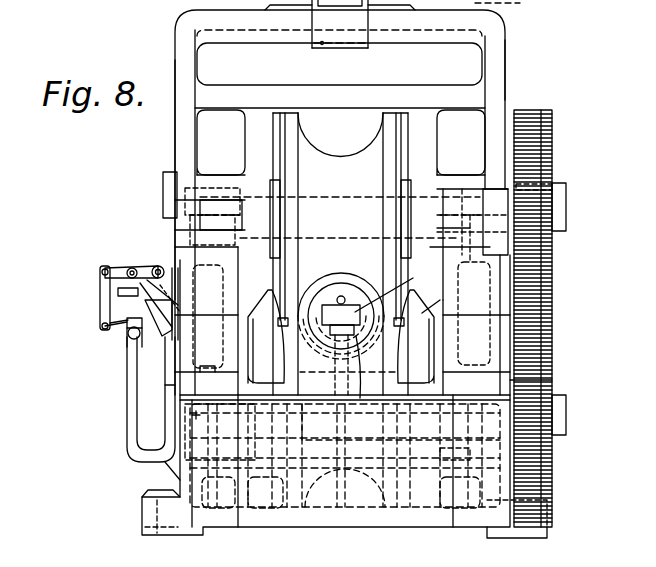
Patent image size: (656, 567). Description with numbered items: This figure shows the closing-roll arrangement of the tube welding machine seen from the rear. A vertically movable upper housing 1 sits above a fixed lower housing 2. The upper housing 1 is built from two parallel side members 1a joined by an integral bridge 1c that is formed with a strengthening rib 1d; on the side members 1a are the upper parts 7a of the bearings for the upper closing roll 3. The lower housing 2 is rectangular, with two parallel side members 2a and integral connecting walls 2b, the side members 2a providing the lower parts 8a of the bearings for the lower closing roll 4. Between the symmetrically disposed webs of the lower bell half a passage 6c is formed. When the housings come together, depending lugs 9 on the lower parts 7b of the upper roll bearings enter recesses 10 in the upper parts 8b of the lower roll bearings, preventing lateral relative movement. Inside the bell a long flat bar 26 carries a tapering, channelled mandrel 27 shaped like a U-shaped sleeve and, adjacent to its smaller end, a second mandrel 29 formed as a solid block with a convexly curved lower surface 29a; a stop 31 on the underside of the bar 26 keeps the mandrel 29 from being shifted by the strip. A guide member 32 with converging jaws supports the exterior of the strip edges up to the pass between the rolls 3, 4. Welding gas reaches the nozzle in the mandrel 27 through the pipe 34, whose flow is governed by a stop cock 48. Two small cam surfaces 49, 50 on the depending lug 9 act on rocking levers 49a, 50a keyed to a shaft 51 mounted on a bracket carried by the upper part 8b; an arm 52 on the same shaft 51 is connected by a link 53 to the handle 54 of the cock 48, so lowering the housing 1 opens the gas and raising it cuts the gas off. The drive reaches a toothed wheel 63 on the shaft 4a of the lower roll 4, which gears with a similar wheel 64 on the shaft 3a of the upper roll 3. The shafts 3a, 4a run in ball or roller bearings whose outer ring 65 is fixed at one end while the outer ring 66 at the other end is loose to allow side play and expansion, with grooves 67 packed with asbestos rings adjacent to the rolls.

The upper housing 1 is at (341, 202).
The side members 1a is at (186, 52).
The bridge 1c is at (212, 12).
The strengthening rib 1d is at (225, 100).
The lower housing 2 is at (510, 428).
The side members 2a is at (175, 482).
The connecting walls 2b is at (401, 422).
The upper closing roll 3 is at (373, 152).
The shaft of the upper roll 3a is at (568, 228).
The lower closing roll 4 is at (395, 372).
The shaft of the lower roll 4a is at (568, 430).
The passage 6c is at (522, 3).
The upper parts of the bearings for the upper closing roll 7a is at (212, 176).
The lower parts of the upper closing roll bearings 7b is at (176, 240).
The lower parts of the bearings for the lower closing roll 8a is at (178, 414).
The upper parts of the bearings for the lower roll 8b is at (150, 385).
The depending lugs 9 is at (400, 247).
The recesses 10 is at (553, 322).
The long flat bar 26 is at (396, 289).
The mandrel 27 is at (318, 292).
The second mandrel 29 is at (332, 338).
The lower surface 29a is at (357, 384).
The stop 31 is at (354, 328).
The guide member 32 is at (422, 313).
The pipe 34 is at (316, 468).
The stop cock 48 is at (126, 338).
The cam surface 49 is at (158, 294).
The rocking lever 49a is at (130, 270).
The cam surface 50 is at (160, 266).
The rocking lever 50a is at (142, 302).
The shaft 51 is at (125, 283).
The arm 52 is at (100, 269).
The link 53 is at (150, 290).
The handle 54 is at (120, 327).
The toothed wheel 63 is at (555, 366).
The toothed wheel 64 is at (546, 167).
The outer ring 65 is at (240, 228).
The outer ring 66 is at (555, 186).
The grooves 67 is at (243, 198).